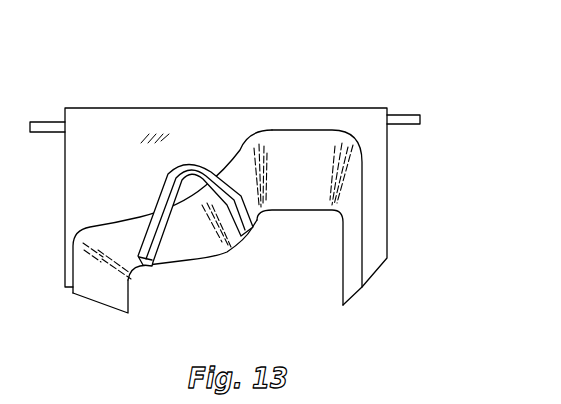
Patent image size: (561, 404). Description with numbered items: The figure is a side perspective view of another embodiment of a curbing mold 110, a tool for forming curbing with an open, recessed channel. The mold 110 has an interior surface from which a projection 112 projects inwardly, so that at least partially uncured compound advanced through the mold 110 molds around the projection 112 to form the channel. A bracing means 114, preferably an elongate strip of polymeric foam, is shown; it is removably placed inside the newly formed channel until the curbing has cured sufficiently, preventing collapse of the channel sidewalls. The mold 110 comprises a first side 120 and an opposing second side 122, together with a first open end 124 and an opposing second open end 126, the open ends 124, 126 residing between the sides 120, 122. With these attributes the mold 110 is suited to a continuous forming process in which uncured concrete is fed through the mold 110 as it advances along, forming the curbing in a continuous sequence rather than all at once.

The mold 110 is at (263, 64).
The projection 112 is at (257, 226).
The bracing means 114 is at (166, 175).
The first side 120 is at (348, 287).
The second side 122 is at (103, 292).
The first open end 124 is at (362, 217).
The second open end 126 is at (342, 258).